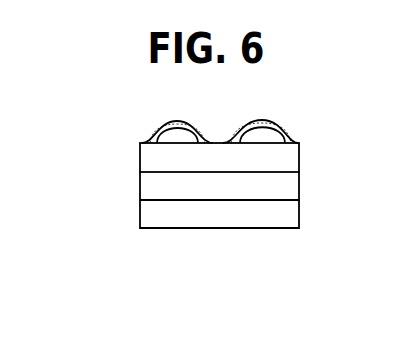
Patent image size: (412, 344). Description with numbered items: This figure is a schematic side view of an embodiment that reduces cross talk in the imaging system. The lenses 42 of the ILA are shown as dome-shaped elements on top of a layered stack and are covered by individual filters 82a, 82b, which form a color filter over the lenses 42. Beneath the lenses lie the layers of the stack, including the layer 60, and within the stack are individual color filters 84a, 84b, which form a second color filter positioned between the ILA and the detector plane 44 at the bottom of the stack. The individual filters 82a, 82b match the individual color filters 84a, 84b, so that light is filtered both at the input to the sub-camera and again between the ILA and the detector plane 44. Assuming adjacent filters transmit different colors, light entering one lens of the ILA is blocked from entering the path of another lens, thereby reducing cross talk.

The base layer 60 is at (145, 160).
The individual filter 82a is at (157, 124).
The individual filter 82b is at (238, 125).
The lens 42 is at (276, 132).
The individual color filter 84a is at (143, 199).
The individual color filter 84b is at (290, 199).
The detector plane 44 is at (288, 228).